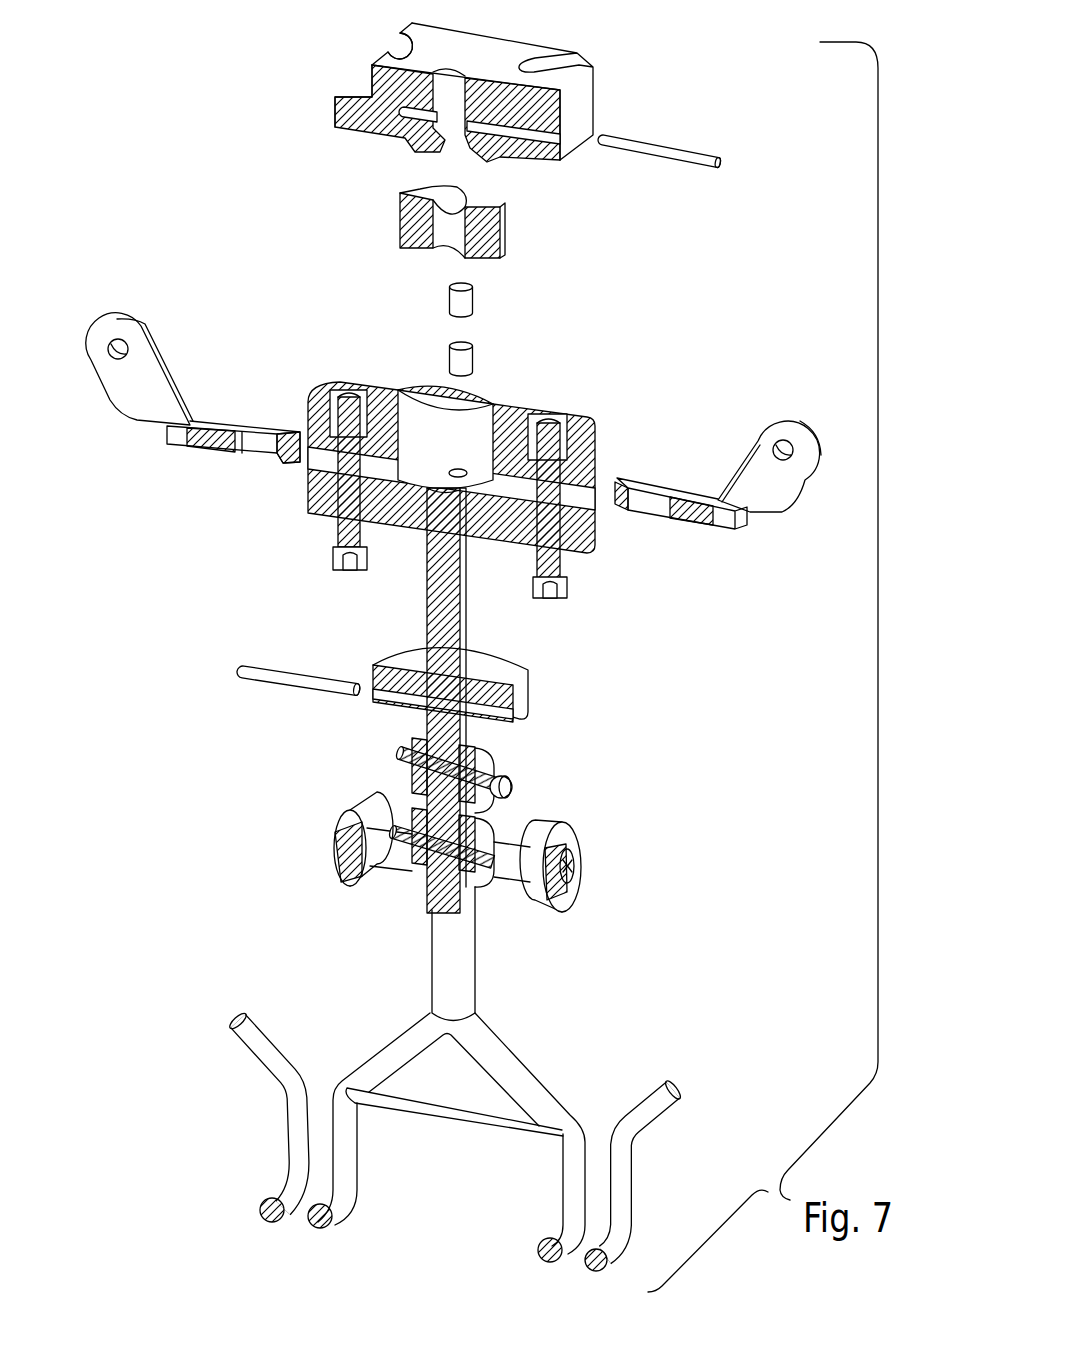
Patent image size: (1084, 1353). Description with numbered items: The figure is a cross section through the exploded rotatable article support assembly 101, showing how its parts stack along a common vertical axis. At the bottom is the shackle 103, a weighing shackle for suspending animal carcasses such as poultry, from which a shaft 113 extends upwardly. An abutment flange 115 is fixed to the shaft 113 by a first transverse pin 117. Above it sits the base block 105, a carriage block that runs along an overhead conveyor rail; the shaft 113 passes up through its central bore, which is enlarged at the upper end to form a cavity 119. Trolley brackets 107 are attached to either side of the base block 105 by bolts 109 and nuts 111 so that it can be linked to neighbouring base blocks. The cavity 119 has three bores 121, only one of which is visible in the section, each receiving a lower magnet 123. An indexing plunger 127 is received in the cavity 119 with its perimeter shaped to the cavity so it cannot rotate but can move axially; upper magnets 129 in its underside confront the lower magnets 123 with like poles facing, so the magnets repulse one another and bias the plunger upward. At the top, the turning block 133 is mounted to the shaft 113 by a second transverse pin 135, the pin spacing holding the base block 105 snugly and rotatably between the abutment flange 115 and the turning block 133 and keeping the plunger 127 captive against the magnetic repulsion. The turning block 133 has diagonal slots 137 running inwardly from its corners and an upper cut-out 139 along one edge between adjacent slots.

The rotatable article support assembly 101 is at (769, 282).
The shackle 103 is at (430, 958).
The base block 105 is at (450, 475).
The trolley brackets 107 is at (140, 322).
The bolts 109 is at (333, 557).
The nuts 111 is at (332, 407).
The shaft 113 is at (427, 594).
The abutment flange 115 is at (493, 662).
The first transverse pin 117 is at (300, 692).
The cavity 119 is at (435, 428).
The bores 121 is at (462, 470).
The lower magnet 123 is at (476, 354).
The indexing plunger 127 is at (398, 226).
The upper magnets 129 is at (476, 297).
The turning block 133 is at (507, 87).
The second transverse pin 135 is at (658, 143).
The diagonal slots 137 is at (414, 43).
The upper cut-out 139 is at (360, 88).